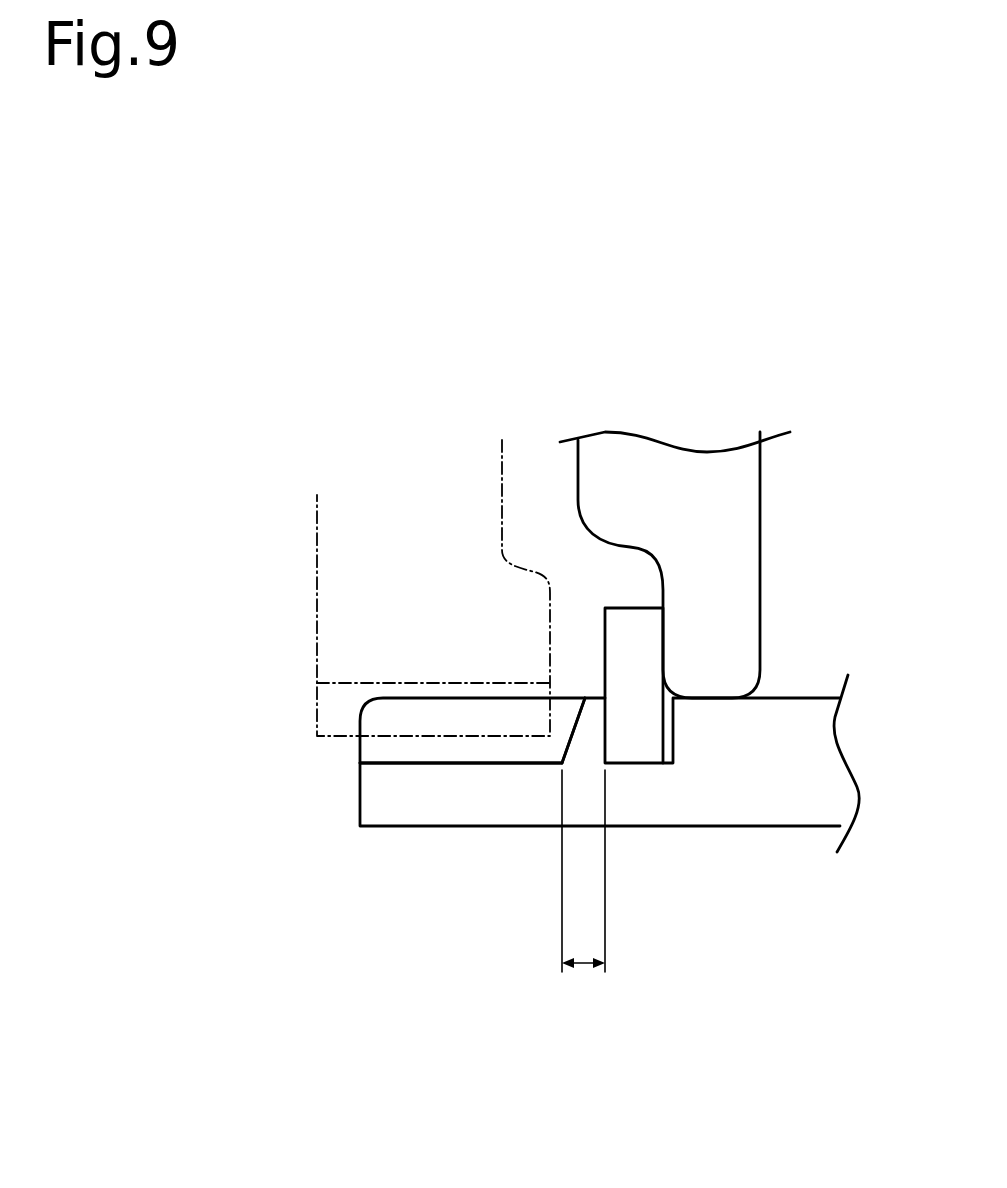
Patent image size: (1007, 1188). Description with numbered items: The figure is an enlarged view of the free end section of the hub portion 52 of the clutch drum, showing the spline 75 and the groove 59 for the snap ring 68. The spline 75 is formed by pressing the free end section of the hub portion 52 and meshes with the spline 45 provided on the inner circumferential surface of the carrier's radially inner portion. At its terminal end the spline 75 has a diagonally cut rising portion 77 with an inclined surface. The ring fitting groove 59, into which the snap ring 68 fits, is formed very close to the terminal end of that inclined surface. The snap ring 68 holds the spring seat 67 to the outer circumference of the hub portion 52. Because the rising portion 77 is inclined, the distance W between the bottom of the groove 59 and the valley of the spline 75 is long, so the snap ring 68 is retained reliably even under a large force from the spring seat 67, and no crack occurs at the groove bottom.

The spline 45 is at (407, 737).
The hub portion 52 is at (467, 797).
The groove 59 is at (607, 730).
The spring seat 67 is at (758, 487).
The snap ring 68 is at (630, 615).
The spline 75 is at (393, 712).
The diagonally cut rising portion 77 is at (575, 727).